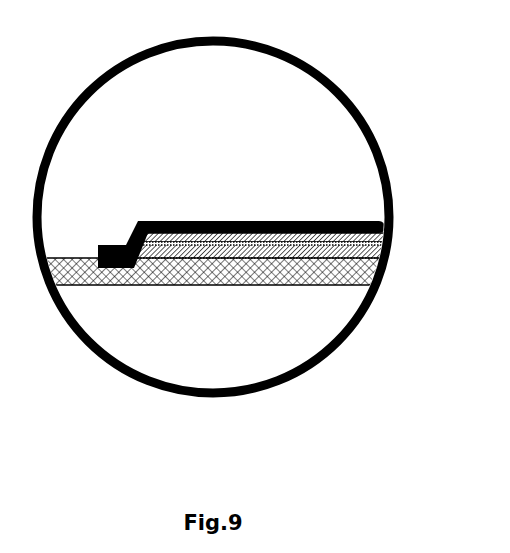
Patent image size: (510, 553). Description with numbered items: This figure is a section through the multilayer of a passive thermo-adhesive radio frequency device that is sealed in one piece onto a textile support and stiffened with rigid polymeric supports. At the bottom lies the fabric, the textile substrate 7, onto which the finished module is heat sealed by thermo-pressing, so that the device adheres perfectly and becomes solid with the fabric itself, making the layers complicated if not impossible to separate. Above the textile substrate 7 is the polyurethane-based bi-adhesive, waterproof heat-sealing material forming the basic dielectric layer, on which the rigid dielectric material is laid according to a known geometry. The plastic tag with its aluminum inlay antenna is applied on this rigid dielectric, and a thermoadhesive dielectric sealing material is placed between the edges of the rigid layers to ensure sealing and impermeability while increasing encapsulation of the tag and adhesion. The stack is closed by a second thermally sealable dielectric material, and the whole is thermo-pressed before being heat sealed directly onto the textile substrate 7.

The textile substrate 7 is at (205, 277).